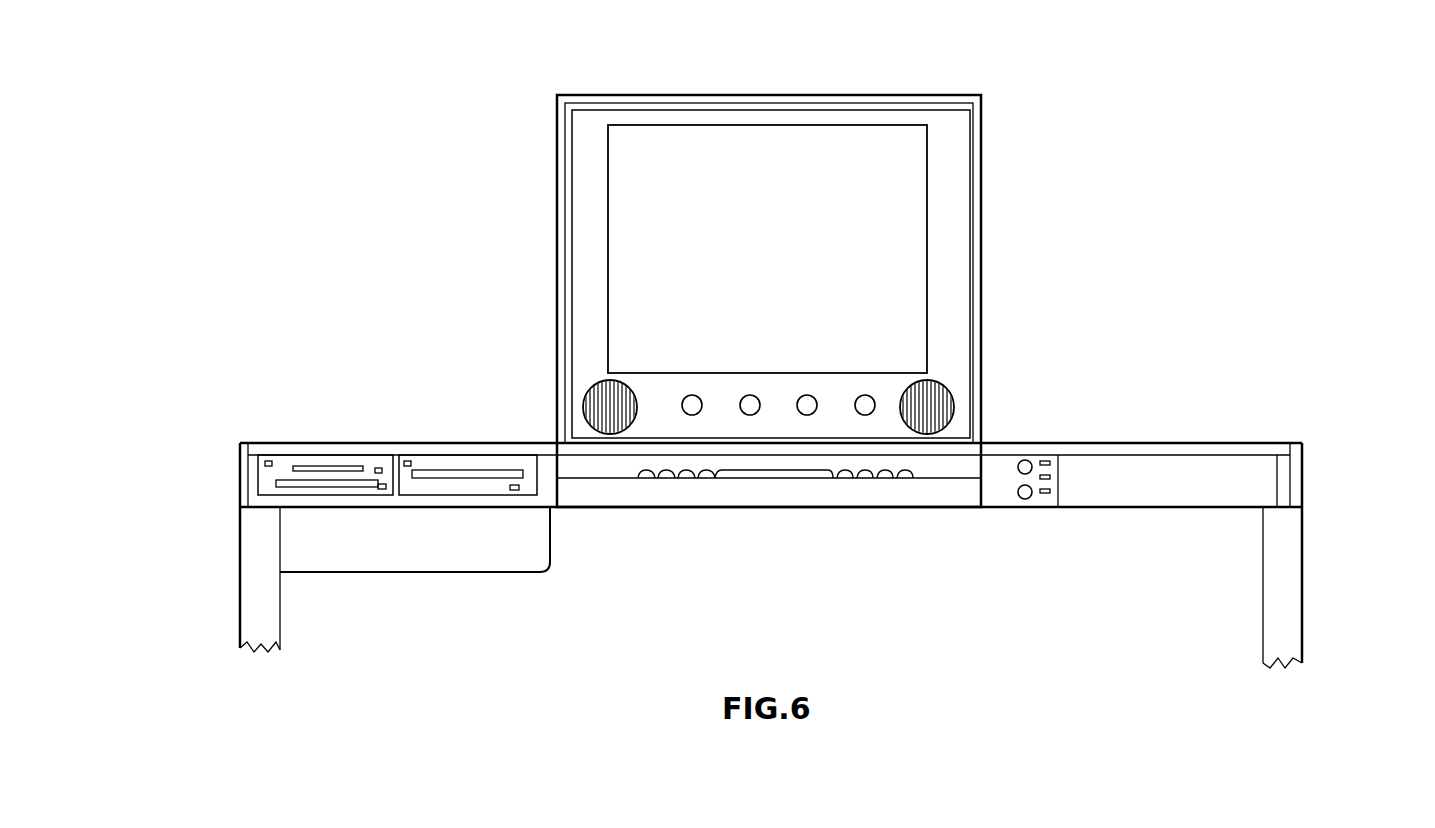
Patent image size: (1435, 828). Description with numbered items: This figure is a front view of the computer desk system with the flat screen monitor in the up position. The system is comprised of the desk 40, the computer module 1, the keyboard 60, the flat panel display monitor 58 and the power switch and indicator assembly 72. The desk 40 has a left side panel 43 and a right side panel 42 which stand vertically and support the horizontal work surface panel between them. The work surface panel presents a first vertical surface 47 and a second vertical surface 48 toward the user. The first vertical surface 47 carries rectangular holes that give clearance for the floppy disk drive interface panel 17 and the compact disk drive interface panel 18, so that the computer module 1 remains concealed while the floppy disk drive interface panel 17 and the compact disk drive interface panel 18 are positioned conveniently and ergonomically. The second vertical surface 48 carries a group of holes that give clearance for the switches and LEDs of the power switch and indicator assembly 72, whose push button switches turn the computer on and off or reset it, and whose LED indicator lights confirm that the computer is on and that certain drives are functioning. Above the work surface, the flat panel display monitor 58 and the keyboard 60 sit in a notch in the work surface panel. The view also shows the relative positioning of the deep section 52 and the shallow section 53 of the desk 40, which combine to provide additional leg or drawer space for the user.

The computer module 1 is at (771, 550).
The floppy disk drive interface panel 17 is at (370, 467).
The compact disk drive interface panel 18 is at (486, 465).
The desk 40 is at (1362, 308).
The right side panel 42 is at (1290, 607).
The left side panel 43 is at (254, 614).
The first vertical surface 47 is at (550, 490).
The second vertical surface 48 is at (999, 572).
The deep section 52 is at (562, 513).
The shallow section 53 is at (341, 457).
The flat panel display monitor 58 is at (897, 227).
The keyboard 60 is at (823, 492).
The power switch and indicator assembly 72 is at (1028, 497).